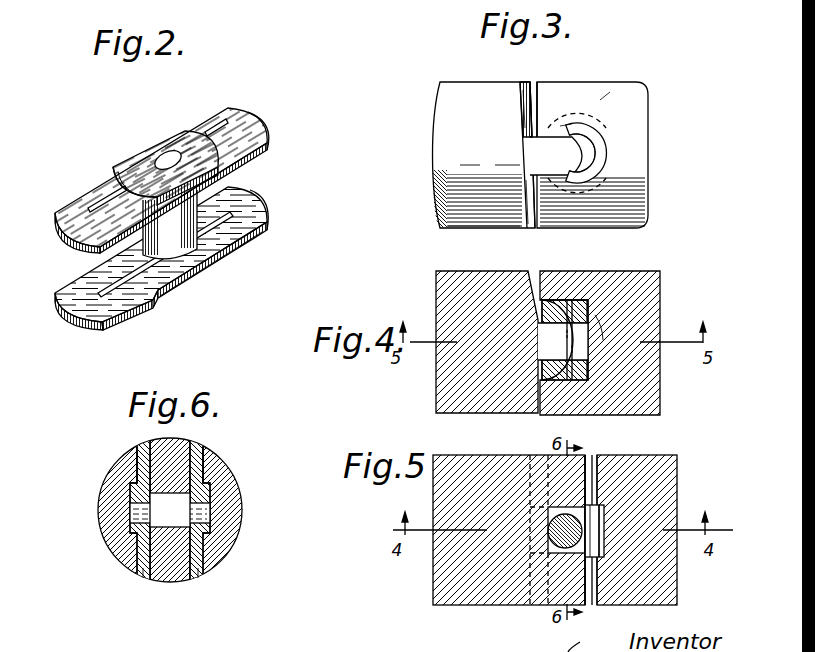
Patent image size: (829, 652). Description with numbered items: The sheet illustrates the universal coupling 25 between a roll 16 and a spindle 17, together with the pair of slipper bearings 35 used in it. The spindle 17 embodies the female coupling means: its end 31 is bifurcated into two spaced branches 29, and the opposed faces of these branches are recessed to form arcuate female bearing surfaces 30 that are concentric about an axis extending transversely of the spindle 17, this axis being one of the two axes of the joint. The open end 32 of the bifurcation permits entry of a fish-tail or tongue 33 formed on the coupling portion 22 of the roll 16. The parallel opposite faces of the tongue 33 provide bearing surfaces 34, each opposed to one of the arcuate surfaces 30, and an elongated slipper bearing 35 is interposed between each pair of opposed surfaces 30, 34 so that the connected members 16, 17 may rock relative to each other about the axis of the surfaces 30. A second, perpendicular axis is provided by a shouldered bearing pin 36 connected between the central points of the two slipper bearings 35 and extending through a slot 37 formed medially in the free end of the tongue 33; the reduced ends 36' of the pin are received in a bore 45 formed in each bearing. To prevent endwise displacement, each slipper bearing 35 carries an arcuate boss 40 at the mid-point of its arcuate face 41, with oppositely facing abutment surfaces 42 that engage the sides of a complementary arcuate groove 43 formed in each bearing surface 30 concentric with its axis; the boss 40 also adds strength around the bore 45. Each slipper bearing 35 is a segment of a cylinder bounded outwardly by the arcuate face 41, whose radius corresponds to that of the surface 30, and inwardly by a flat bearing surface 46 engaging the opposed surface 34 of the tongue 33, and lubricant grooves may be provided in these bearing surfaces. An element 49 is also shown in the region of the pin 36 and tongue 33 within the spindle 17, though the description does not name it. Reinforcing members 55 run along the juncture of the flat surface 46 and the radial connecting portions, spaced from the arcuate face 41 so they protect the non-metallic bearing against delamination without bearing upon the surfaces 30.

In FIG. 3, the roll 16 is at (432, 143).
In FIG. 4, the roll 16 is at (436, 300).
In FIG. 5, the roll 16 is at (433, 576).
In FIG. 3, the spindle 17 is at (648, 108).
In FIG. 4, the spindle 17 is at (655, 290).
In FIG. 5, the spindle 17 is at (665, 480).
In FIG. 6, the spindle 17 is at (236, 496).
In FIG. 3, the coupling portion 22 is at (478, 228).
In FIG. 4, the coupling portion 22 is at (440, 377).
In FIG. 5, the coupling portion 22 is at (445, 482).
In FIG. 3, the coupling 25 is at (511, 75).
In FIG. 3, the branches 29 is at (600, 100).
In FIG. 3, the female bearing surfaces 30 is at (586, 130).
In FIG. 4, the female bearing surfaces 30 is at (600, 300).
In FIG. 5, the female bearing surfaces 30 is at (600, 478).
In FIG. 6, the female bearing surfaces 30 is at (143, 578).
In FIG. 3, the end of the spindle 31 is at (536, 92).
In FIG. 3, the open end 32 is at (548, 128).
In FIG. 3, the tongue 33 is at (543, 152).
In FIG. 4, the tongue 33 is at (545, 330).
In FIG. 5, the tongue 33 is at (585, 600).
In FIG. 6, the tongue 33 is at (172, 582).
In FIG. 3, the bearing surfaces 34 is at (600, 148).
In FIG. 2, the slipper bearing 35 is at (268, 207).
In FIG. 3, the slipper bearing 35 is at (562, 128).
In FIG. 2, the bearing pin 36 is at (217, 215).
In FIG. 4, the bearing pin 36 is at (633, 337).
In FIG. 5, the bearing pin 36 is at (544, 541).
In FIG. 6, the bearing pin 36 is at (119, 510).
In FIG. 4, the reduced ends of the bearing pin 36' is at (577, 272).
In FIG. 6, the reduced ends of the bearing pin 36' is at (121, 509).
In FIG. 4, the slot 37 is at (548, 348).
In FIG. 5, the slot 37 is at (590, 540).
In FIG. 2, the arcuate boss 40 is at (140, 155).
In FIG. 6, the arcuate boss 40 is at (130, 490).
In FIG. 2, the arcuate face 41 is at (90, 194).
In FIG. 6, the arcuate face 41 is at (135, 458).
In FIG. 2, the abutment surfaces 42 is at (112, 174).
In FIG. 6, the arcuate groove 43 is at (208, 490).
In FIG. 2, the bore 45 is at (165, 155).
In FIG. 4, the bore 45 is at (565, 300).
In FIG. 2, the flat bearing surface 46 is at (240, 222).
In FIG. 3, the retaining ring 49 is at (605, 165).
In FIG. 4, the retaining ring 49 is at (600, 355).
In FIG. 5, the retaining ring 49 is at (610, 550).
In FIG. 2, the reinforcing members 55 is at (270, 152).